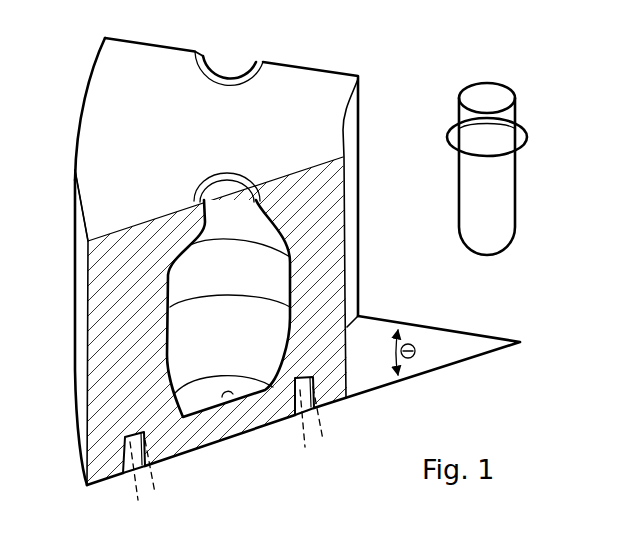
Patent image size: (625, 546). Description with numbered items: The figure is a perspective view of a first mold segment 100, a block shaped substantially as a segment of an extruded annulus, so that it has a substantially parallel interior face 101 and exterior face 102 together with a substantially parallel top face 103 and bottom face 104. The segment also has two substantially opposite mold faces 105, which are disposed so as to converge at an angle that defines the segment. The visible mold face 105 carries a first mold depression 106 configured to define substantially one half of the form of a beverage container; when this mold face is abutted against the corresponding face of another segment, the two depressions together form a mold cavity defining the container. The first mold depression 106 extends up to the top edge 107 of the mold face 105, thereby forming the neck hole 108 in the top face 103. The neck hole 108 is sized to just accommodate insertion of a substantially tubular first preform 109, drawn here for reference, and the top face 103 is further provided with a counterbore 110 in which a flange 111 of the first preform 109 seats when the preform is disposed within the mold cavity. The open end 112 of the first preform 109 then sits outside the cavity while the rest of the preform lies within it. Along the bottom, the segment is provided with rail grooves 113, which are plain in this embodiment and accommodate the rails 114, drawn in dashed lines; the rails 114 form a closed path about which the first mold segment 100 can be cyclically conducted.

The first mold segment 100 is at (312, 78).
The interior face 101 is at (360, 230).
The exterior face 102 is at (82, 280).
The top face 103 is at (107, 88).
The bottom face 104 is at (217, 444).
The mold face 105 is at (160, 46).
The first mold depression 106 is at (173, 340).
The top edge 107 is at (88, 242).
The neck hole 108 is at (223, 72).
The first preform 109 is at (535, 176).
The counterbore 110 is at (263, 62).
The flange 111 is at (140, 503).
The open end 112 is at (505, 73).
The rail groove 113 is at (132, 470).
The rail 114 is at (318, 406).